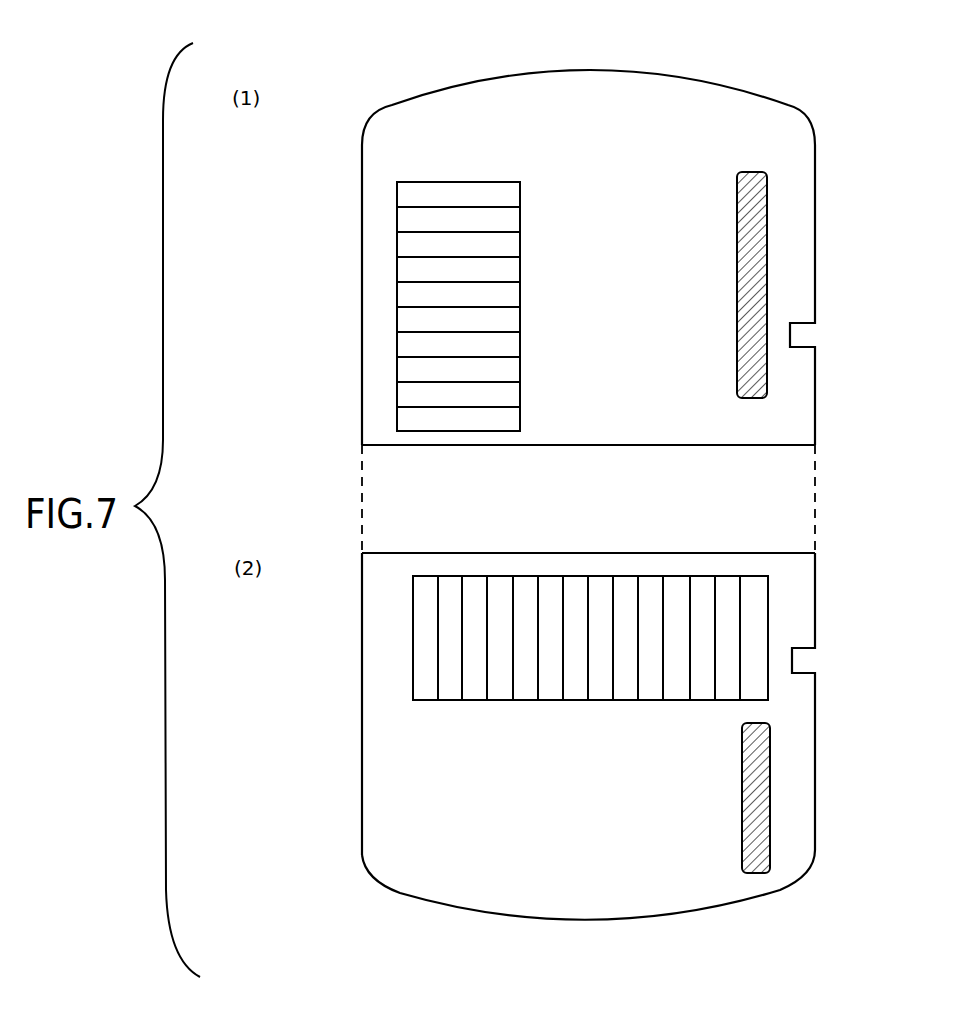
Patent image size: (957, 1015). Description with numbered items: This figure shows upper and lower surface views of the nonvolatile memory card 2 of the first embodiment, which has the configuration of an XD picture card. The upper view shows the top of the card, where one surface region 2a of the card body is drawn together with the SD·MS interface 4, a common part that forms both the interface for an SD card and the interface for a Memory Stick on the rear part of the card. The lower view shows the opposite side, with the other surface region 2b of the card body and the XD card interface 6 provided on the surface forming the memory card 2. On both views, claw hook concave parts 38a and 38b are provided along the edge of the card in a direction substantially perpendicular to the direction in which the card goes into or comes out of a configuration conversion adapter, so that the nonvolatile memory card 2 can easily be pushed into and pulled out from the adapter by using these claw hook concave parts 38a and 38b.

The nonvolatile memory card 2 is at (698, 80).
The upper surface of case 2a is at (484, 93).
The lower surface of case 2b is at (423, 893).
The SD·MS interface 4 is at (397, 243).
The XD card interface 6 is at (768, 610).
The claw hook concave part 38a is at (767, 241).
The claw hook concave part 38b is at (770, 763).